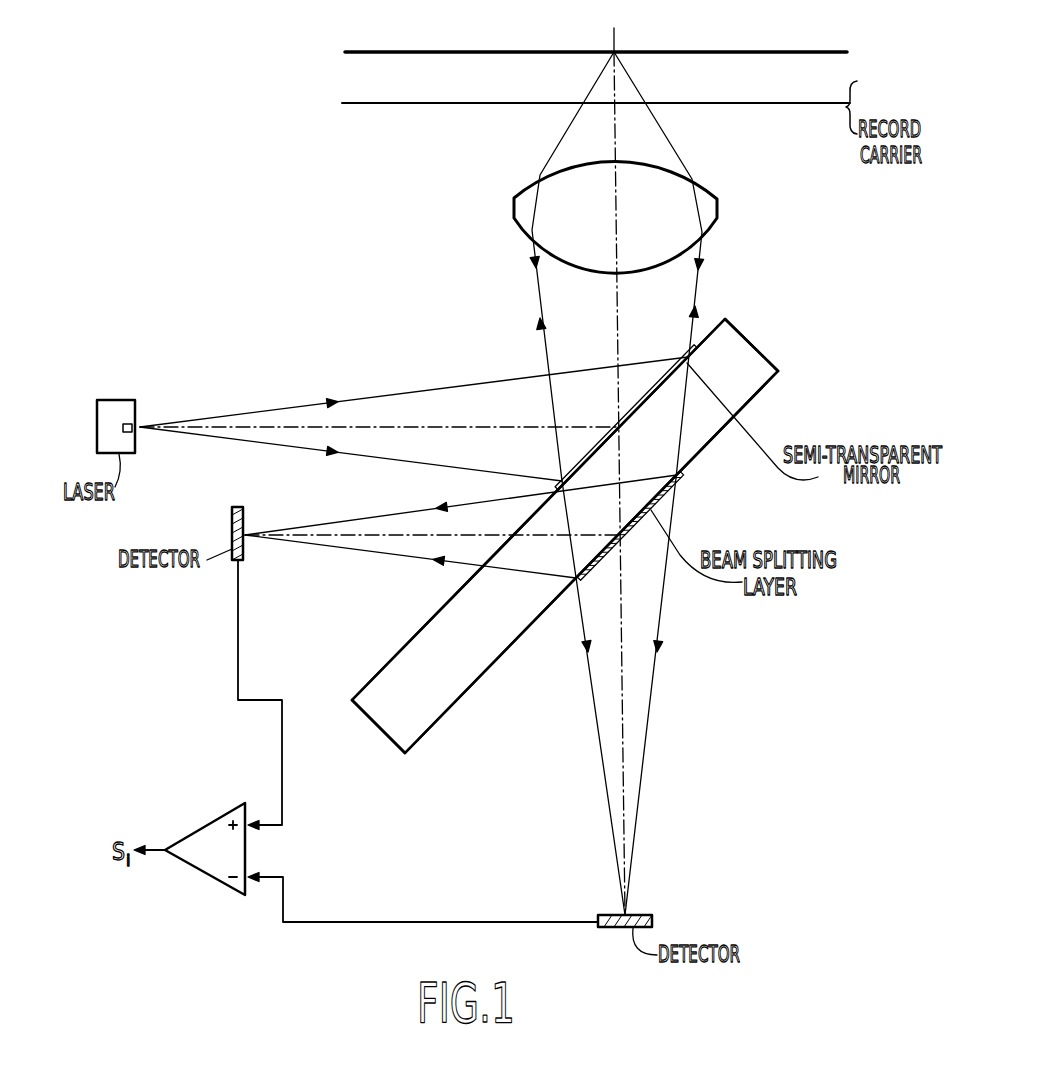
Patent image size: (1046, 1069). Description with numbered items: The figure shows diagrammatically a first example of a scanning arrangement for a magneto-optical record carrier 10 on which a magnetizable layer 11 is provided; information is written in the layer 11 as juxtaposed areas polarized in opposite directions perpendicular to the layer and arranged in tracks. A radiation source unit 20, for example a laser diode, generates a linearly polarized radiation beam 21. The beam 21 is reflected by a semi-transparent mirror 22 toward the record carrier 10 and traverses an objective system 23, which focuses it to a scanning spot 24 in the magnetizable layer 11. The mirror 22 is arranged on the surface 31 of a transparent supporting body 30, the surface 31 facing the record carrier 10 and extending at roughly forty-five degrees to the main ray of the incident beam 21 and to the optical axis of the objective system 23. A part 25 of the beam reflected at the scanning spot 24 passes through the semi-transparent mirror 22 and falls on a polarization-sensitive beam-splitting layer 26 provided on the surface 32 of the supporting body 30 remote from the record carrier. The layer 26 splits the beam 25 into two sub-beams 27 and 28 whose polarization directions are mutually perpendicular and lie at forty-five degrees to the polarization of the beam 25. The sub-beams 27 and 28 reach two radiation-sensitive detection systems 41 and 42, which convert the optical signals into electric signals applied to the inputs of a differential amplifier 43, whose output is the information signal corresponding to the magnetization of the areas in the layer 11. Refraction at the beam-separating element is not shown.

The magneto-optical record carrier 10 is at (778, 88).
The magnetizable layer 11 is at (769, 50).
The radiation source unit 20 is at (118, 407).
The radiation beam 21 is at (430, 407).
The semi-transparent mirror 22 is at (662, 375).
The objective system 23 is at (706, 208).
The scanning spot 24 is at (617, 51).
The reflected beam part 25 is at (667, 450).
The polarization-sensitive beam-splitting layer 26 is at (658, 500).
The first sub-beam 27 is at (643, 690).
The second sub-beam 28 is at (332, 542).
The transparent supporting body 30 is at (748, 365).
The surface of supporting body facing record carrier 31 is at (717, 333).
The surface of supporting body remote from record carrier 32 is at (757, 402).
The radiation-sensitive detection system 41 is at (652, 921).
The radiation-sensitive detection system 42 is at (232, 522).
The differential amplifier 43 is at (212, 877).